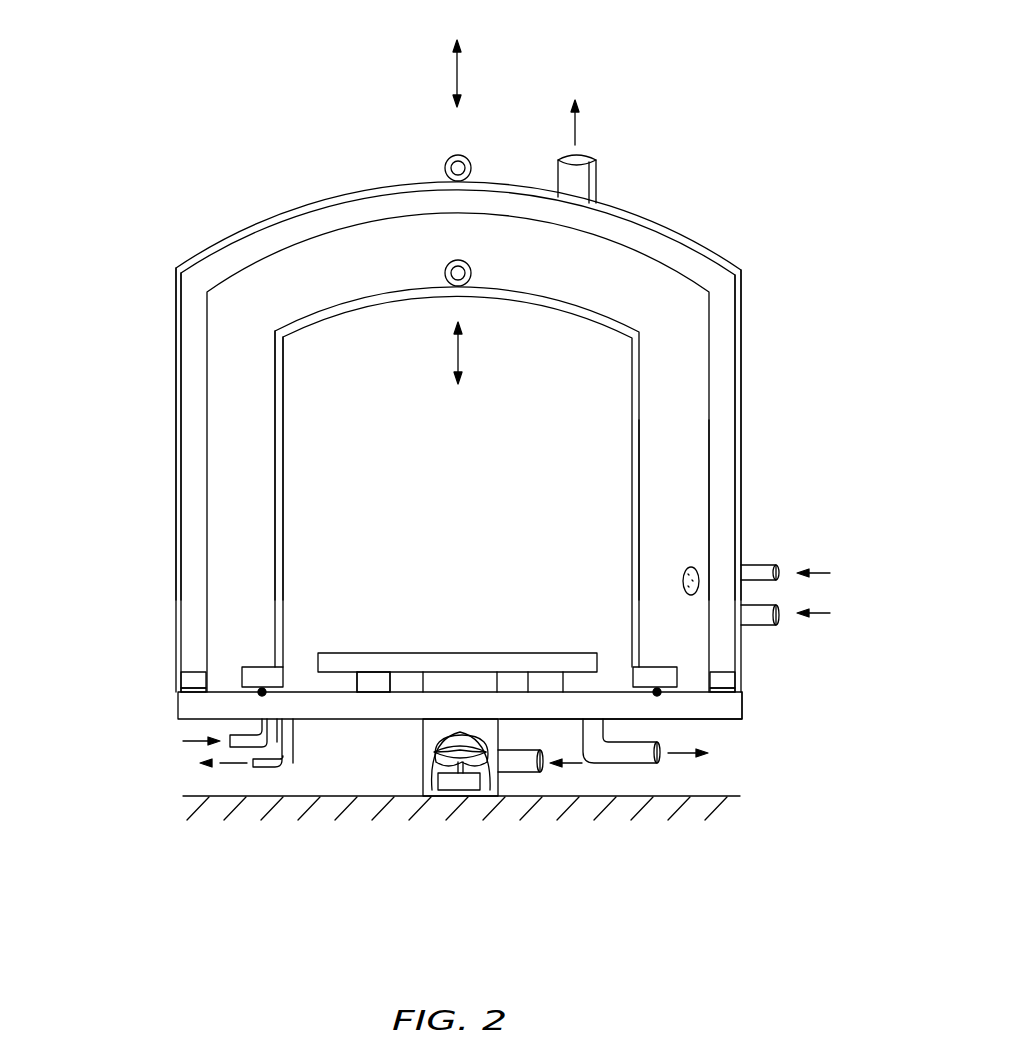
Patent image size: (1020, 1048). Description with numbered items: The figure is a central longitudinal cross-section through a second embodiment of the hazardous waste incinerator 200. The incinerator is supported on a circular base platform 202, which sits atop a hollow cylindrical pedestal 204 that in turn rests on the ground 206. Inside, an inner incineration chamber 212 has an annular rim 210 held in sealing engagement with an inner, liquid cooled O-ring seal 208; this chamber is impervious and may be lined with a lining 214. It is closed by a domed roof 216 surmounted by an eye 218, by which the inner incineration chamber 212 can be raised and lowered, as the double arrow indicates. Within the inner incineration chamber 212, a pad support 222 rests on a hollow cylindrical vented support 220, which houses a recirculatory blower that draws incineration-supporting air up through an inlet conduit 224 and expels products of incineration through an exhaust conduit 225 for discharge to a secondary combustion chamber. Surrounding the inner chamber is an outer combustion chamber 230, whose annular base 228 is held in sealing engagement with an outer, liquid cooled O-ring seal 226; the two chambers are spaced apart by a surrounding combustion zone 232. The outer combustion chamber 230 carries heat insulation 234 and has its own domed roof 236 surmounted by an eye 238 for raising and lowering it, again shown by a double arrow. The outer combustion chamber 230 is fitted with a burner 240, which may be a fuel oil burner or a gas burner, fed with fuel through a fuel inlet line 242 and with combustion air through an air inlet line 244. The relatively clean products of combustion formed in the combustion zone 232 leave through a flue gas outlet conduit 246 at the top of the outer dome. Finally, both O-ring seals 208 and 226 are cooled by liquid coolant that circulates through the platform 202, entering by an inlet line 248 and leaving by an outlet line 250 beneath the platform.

The hazardous waste incinerator 200 is at (665, 125).
The circular base platform 202 is at (742, 718).
The hollow cylindrical pedestal 204 is at (437, 790).
The ground 206 is at (725, 796).
The inner liquid cooled O-ring seal 208 is at (262, 693).
The annular rim 210 is at (255, 668).
The inner incineration chamber 212 is at (480, 473).
The lining 214 is at (284, 485).
The domed roof 216 is at (393, 302).
The eye 218 is at (445, 273).
The hollow cylindrical vented support 220 is at (373, 688).
The pad support 222 is at (350, 660).
The inlet conduit 224 is at (513, 765).
The exhaust conduit 225 is at (618, 755).
The outer liquid cooled O-ring seal 226 is at (192, 696).
The annular base 228 is at (192, 680).
The outer combustion chamber 230 is at (181, 485).
The combustion zone 232 is at (688, 473).
The heat insulation 234 is at (725, 331).
The domed roof 236 is at (667, 231).
The eye 238 is at (445, 167).
The burner 240 is at (697, 570).
The fuel inlet line 242 is at (770, 562).
The air inlet line 244 is at (765, 630).
The flue gas outlet conduit 246 is at (590, 175).
The inlet line 248 is at (232, 742).
The outlet line 250 is at (272, 768).